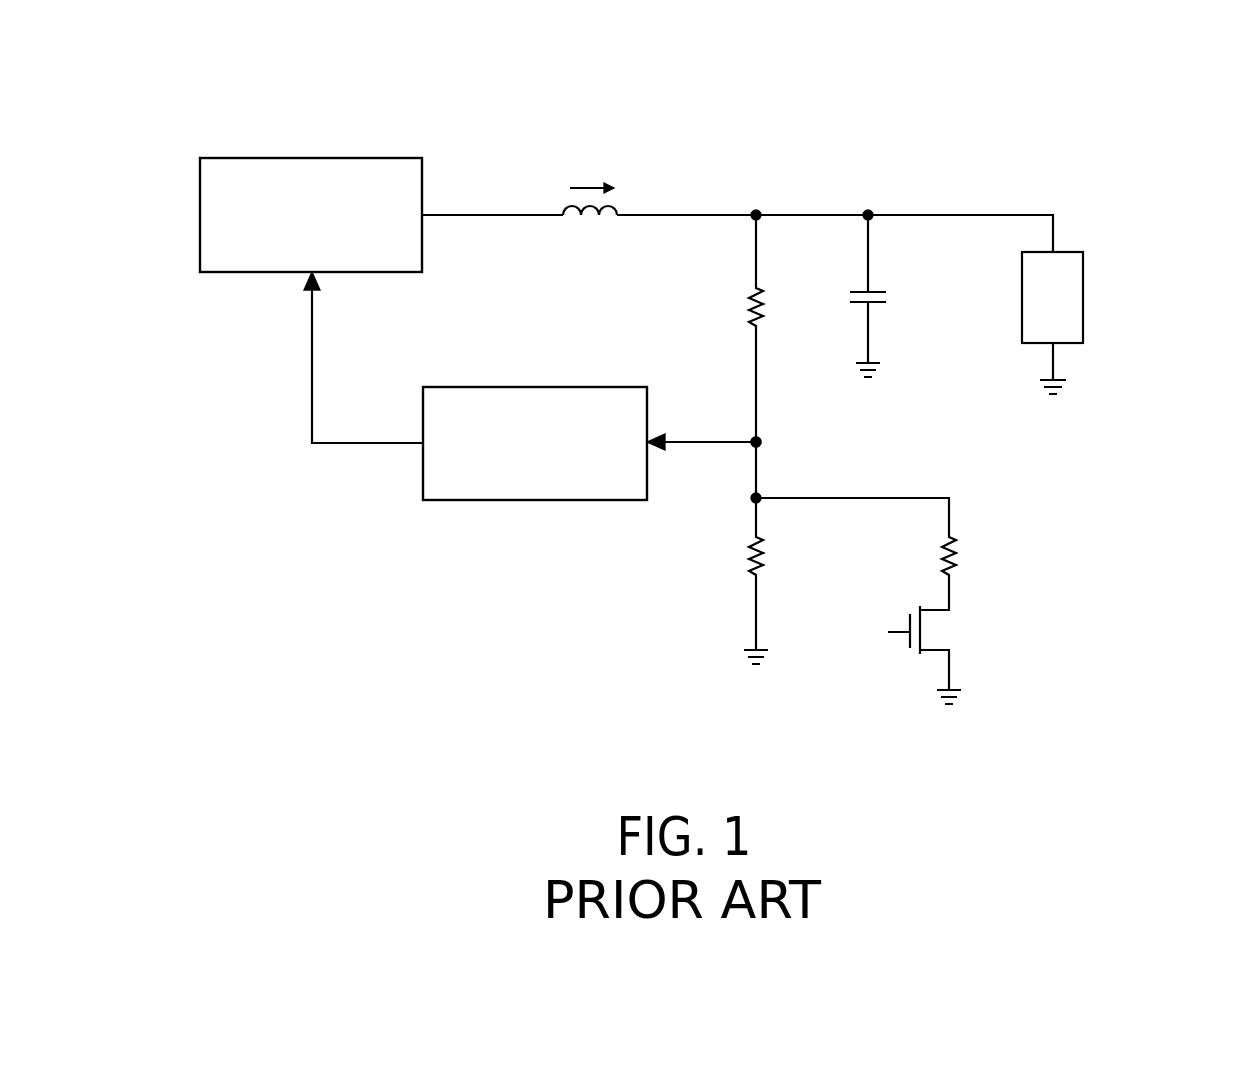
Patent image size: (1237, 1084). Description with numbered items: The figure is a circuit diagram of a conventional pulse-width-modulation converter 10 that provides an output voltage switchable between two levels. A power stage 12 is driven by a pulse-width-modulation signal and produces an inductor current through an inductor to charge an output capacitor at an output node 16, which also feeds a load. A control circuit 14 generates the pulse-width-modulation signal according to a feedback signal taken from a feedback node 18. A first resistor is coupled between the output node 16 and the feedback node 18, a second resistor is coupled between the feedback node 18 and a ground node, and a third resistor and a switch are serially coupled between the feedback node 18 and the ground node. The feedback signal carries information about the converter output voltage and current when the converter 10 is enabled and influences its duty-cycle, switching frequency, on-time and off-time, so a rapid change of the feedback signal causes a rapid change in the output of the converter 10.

The PWM converter 10 is at (1140, 133).
The power stage 12 is at (243, 273).
The control circuit 14 is at (533, 387).
The output node 16 is at (868, 210).
The feedback node 18 is at (762, 441).